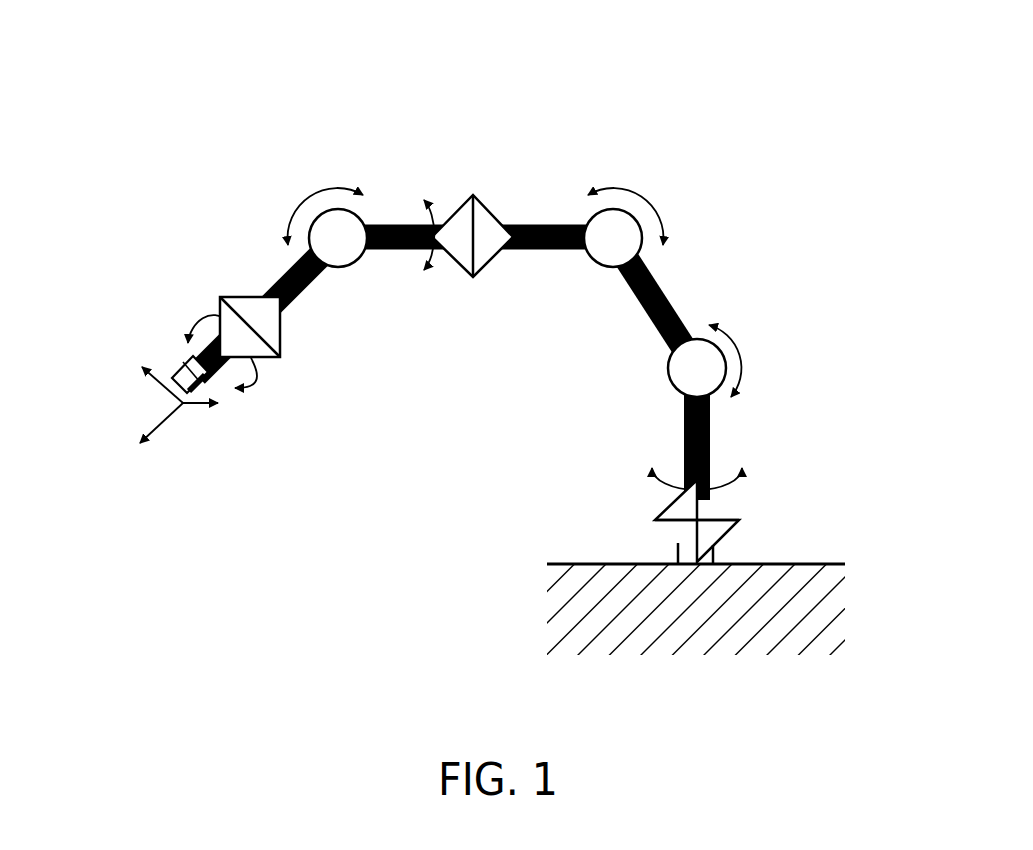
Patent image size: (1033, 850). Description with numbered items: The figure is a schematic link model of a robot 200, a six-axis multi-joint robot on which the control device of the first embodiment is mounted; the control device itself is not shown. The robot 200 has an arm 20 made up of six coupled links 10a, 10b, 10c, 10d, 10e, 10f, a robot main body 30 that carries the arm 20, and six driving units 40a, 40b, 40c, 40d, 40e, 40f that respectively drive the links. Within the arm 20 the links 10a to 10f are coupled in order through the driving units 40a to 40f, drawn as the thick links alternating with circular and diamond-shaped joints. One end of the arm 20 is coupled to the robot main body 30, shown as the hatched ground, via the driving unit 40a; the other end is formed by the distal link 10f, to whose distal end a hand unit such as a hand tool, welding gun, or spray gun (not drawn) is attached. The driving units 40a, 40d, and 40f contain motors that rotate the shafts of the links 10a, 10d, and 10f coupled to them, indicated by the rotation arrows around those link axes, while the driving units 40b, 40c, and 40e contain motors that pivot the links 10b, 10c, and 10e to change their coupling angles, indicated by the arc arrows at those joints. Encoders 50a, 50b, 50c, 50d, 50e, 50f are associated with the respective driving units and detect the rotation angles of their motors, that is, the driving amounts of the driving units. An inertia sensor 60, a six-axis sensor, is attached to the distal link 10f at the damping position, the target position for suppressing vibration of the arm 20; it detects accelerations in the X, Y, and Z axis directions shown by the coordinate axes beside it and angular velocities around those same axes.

The robot 200 is at (814, 82).
The arm 20 is at (696, 153).
The link 10a is at (710, 428).
The link 10b is at (673, 307).
The link 10c is at (537, 225).
The link 10d is at (387, 225).
The link 10e is at (288, 270).
The link 10f is at (260, 362).
The driving unit 40a is at (784, 521).
The encoder 50a is at (715, 530).
The driving unit 40b is at (612, 371).
The encoder 50b is at (680, 367).
The driving unit 40c is at (553, 265).
The encoder 50c is at (600, 248).
The driving unit 40d is at (473, 189).
The encoder 50d is at (490, 227).
The driving unit 40e is at (344, 265).
The encoder 50e is at (340, 255).
The driving unit 40f is at (207, 292).
The encoder 50f is at (253, 310).
The inertia sensor 60 is at (190, 370).
The robot main body 30 is at (582, 577).